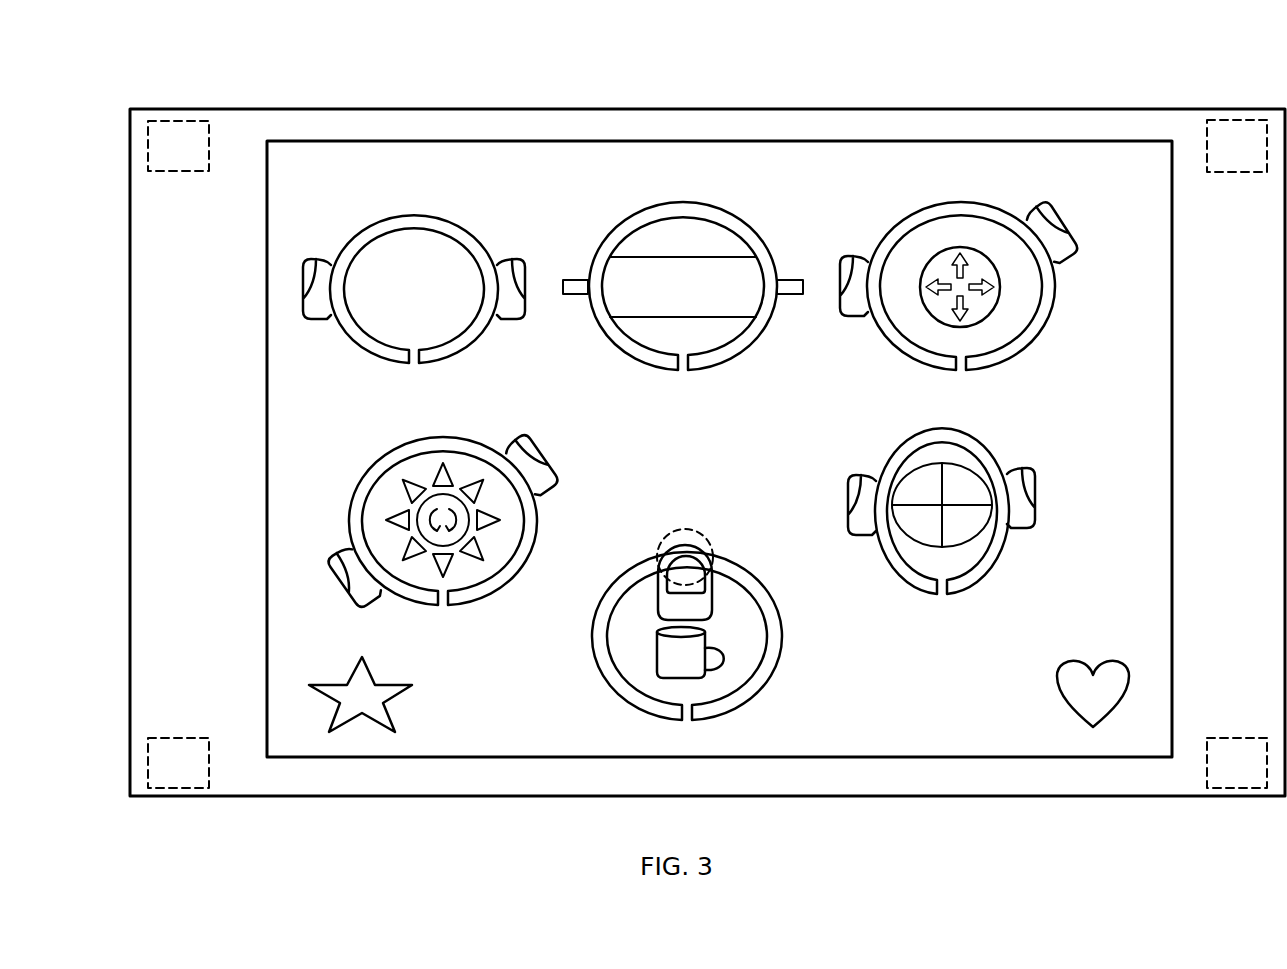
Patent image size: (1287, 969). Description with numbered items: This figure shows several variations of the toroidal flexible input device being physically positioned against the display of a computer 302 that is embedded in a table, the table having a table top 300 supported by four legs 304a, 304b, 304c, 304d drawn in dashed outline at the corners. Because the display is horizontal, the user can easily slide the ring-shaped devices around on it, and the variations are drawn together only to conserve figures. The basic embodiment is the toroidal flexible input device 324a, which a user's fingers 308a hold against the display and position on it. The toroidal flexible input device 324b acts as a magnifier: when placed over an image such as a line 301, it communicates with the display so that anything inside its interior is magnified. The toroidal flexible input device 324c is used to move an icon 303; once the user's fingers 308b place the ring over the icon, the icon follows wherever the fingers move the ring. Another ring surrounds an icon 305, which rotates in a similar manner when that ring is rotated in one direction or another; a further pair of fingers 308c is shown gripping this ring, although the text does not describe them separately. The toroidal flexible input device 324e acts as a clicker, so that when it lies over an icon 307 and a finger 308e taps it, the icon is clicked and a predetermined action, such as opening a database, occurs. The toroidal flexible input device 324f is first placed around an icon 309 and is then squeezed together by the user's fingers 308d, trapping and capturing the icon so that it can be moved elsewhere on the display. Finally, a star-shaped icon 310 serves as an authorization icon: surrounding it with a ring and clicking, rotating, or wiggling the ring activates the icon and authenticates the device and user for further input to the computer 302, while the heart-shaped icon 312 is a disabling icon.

The table top 300 is at (707, 407).
The line 301 is at (664, 243).
The computer 302 is at (668, 449).
The icon 303 is at (978, 325).
The leg 304a is at (178, 172).
The leg 304b is at (1232, 172).
The leg 304c is at (182, 738).
The leg 304d is at (1237, 738).
The icon 305 is at (398, 468).
The icon 307 is at (727, 670).
The user's fingers 308a is at (419, 336).
The user's fingers 308b is at (965, 307).
The ring tab 308c is at (416, 496).
The user's fingers 308d is at (944, 550).
The finger 308e is at (706, 537).
The icon 309 is at (905, 480).
The icon 310 is at (393, 717).
The icon 312 is at (1057, 680).
The toroidal flexible input device 324a is at (398, 242).
The toroidal flexible input device 324b is at (724, 240).
The toroidal flexible input device 324c is at (915, 240).
The toroidal flexible input device 324e is at (614, 636).
The toroidal flexible input device 324f is at (998, 463).